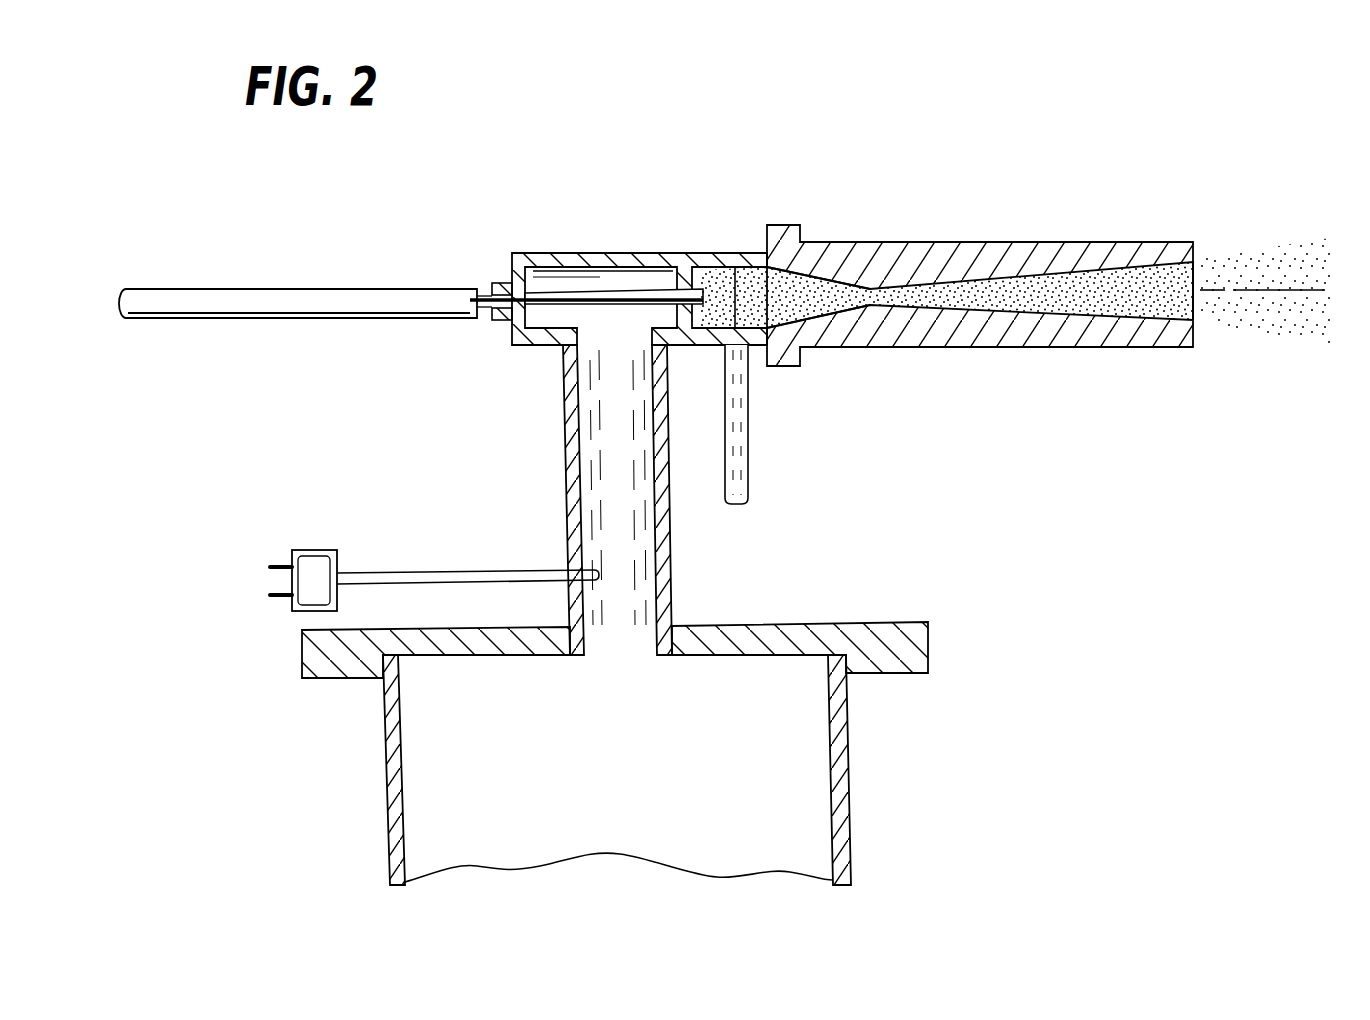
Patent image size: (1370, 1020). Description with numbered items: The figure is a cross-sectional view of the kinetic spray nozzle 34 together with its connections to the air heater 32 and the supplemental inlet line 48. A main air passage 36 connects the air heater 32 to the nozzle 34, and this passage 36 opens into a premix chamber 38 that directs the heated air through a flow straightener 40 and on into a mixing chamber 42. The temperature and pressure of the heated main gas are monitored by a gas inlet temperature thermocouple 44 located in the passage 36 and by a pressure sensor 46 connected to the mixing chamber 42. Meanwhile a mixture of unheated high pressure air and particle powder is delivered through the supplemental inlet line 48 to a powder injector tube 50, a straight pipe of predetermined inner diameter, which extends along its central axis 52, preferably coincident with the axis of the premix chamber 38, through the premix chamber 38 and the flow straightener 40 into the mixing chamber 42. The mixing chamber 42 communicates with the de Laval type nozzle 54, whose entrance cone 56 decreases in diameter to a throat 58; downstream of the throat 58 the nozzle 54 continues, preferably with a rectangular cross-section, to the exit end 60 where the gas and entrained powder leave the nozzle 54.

The air heater 32 is at (850, 826).
The nozzle 34 is at (779, 215).
The main air passage 36 is at (600, 512).
The premix chamber 38 is at (563, 253).
The flow straightener 40 is at (703, 253).
The mixing chamber 42 is at (735, 250).
The gas inlet temperature thermocouple 44 is at (308, 563).
The pressure sensor 46 is at (742, 470).
The supplemental inlet line 48 is at (207, 303).
The powder injector tube 50 is at (500, 262).
The central axis 52 is at (1262, 290).
The de Laval type nozzle 54 is at (976, 243).
The entrance cone 56 is at (826, 243).
The throat 58 is at (872, 305).
The exit end 60 is at (1195, 315).